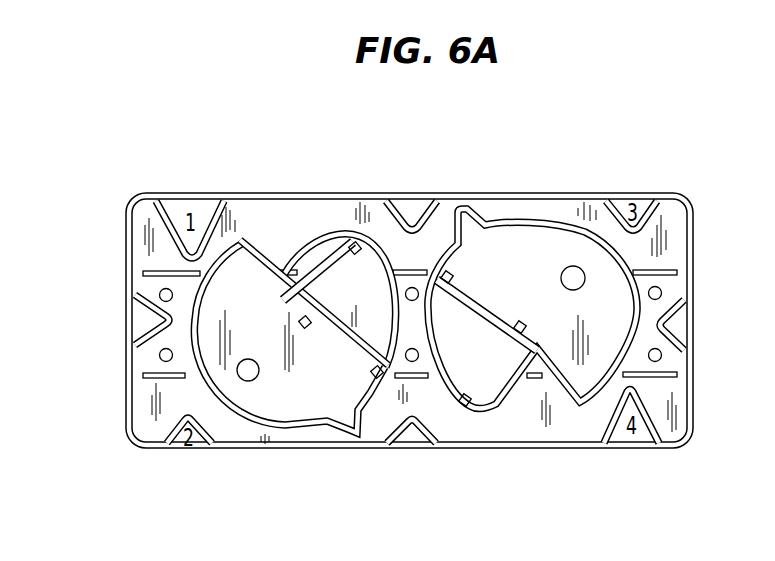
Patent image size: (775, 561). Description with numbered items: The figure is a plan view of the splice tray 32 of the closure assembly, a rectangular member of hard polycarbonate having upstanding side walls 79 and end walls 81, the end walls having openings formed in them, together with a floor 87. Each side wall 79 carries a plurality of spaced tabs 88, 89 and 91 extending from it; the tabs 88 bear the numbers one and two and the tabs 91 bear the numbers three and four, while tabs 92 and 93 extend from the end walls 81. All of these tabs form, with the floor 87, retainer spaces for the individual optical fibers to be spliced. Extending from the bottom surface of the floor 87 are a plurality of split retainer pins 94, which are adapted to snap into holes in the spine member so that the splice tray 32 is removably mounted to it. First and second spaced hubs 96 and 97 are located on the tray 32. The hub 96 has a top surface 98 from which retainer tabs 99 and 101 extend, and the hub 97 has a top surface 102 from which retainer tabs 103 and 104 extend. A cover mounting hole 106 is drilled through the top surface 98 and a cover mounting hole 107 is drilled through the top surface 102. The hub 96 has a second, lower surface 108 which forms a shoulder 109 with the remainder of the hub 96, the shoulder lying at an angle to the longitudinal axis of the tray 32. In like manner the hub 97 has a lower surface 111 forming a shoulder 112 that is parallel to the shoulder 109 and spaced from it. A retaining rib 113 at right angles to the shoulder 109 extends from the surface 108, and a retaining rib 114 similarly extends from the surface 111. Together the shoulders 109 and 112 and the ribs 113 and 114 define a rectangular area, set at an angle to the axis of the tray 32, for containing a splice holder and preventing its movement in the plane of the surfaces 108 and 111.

The splice tray 32 is at (118, 172).
The side wall 79 is at (327, 197).
The end wall 81 is at (128, 412).
The floor 87 is at (538, 447).
The tab 88 is at (188, 208).
The tab 89 is at (410, 207).
The tab 91 is at (625, 203).
The tab 92 is at (165, 320).
The tab 93 is at (680, 325).
The split retainer pin 94 is at (159, 295).
The first hub 96 is at (302, 430).
The second hub 97 is at (538, 218).
The top surface 98 is at (245, 420).
The retainer tab 99 is at (243, 240).
The retainer tab 101 is at (351, 440).
The top surface 102 is at (595, 263).
The retainer tab 103 is at (583, 410).
The retainer tab 104 is at (470, 210).
The cover mounting hole 106 is at (260, 370).
The cover mounting hole 107 is at (560, 278).
The lower surface 108 is at (342, 268).
The shoulder 109 is at (395, 300).
The lower surface 111 is at (480, 382).
The shoulder 112 is at (500, 332).
The retaining rib 113 is at (313, 288).
The retaining rib 114 is at (500, 372).